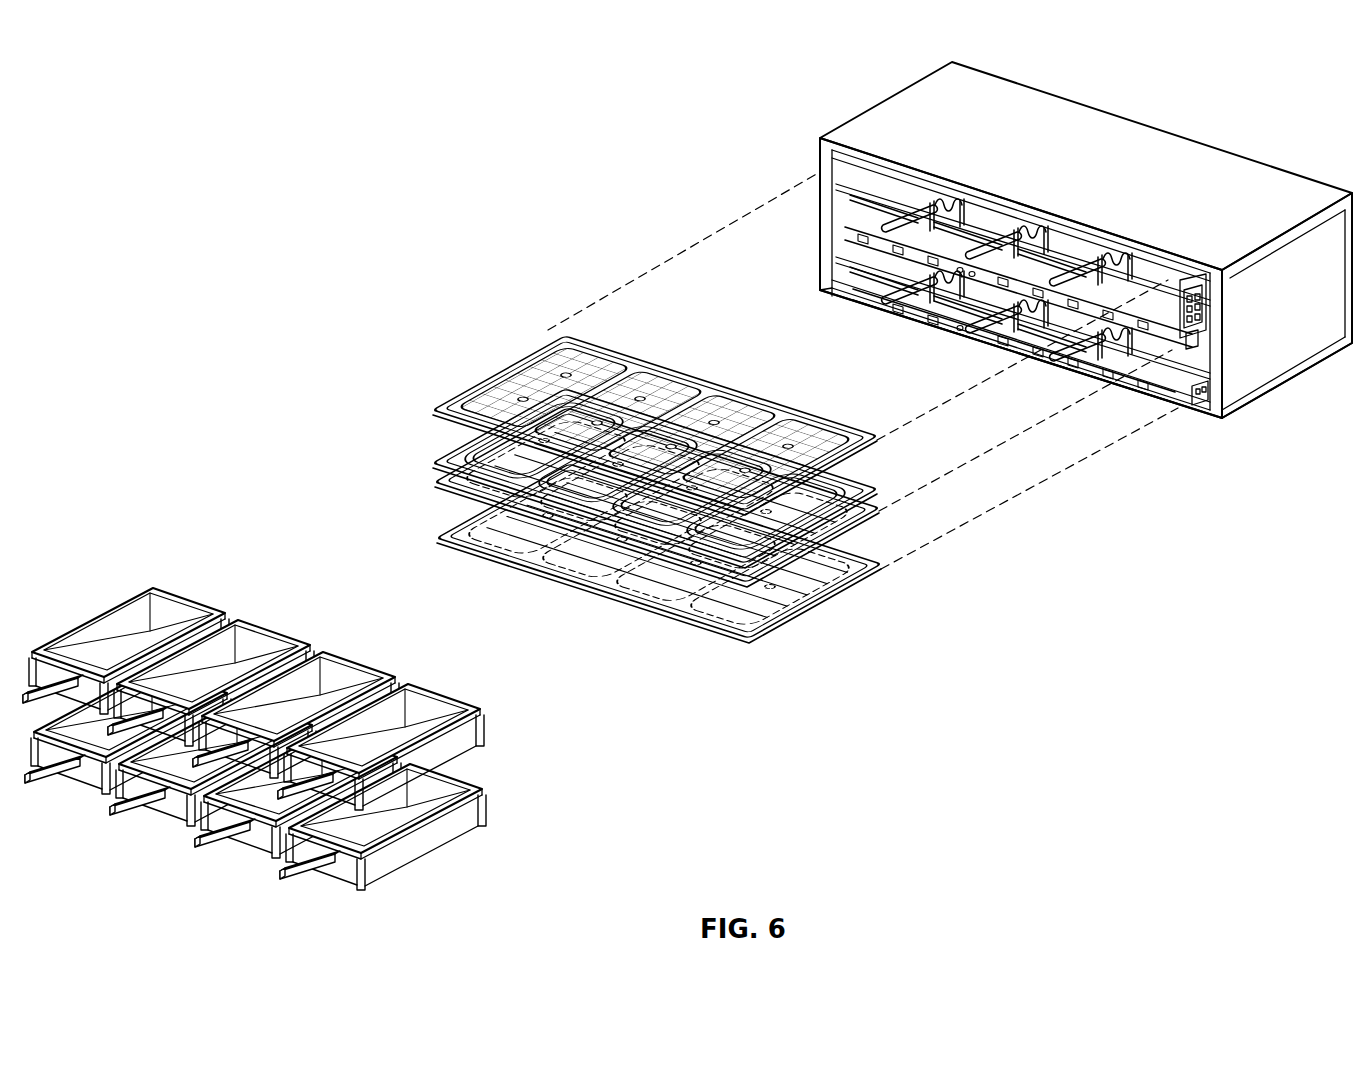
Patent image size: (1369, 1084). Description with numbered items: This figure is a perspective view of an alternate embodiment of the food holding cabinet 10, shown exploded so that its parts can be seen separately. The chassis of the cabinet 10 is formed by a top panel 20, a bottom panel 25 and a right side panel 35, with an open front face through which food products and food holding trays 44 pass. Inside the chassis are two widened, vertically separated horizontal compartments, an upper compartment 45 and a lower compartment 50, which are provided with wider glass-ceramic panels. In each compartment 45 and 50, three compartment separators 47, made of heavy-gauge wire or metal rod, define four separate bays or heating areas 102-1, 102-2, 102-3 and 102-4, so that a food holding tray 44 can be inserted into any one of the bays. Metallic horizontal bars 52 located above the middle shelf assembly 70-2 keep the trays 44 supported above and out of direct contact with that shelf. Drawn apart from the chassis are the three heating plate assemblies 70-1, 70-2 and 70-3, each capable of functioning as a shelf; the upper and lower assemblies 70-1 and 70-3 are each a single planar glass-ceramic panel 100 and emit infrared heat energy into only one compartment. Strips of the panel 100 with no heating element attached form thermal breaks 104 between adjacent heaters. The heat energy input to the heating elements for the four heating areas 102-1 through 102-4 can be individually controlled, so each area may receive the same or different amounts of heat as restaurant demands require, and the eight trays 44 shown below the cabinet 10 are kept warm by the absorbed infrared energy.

The cabinet 10 is at (1292, 115).
The top panel 20 is at (1049, 292).
The bottom panel 25 is at (1253, 410).
The right side panel 35 is at (1290, 355).
The food holding trays 44 is at (468, 660).
The upper compartment 45 is at (842, 172).
The compartment separator 47 is at (908, 196).
The lower compartment 50 is at (845, 260).
The horizontal bars 52 is at (972, 226).
The upper heating plate assembly 70-1 is at (445, 405).
The middle shelf assembly 70-2 is at (432, 492).
The lower heating plate assembly 70-3 is at (450, 545).
The panel 100 is at (870, 535).
The first heating area 102-1 is at (560, 350).
The second heating area 102-2 is at (640, 382).
The third heating area 102-3 is at (750, 400).
The fourth heating area 102-4 is at (820, 430).
The thermal break 104 is at (630, 362).